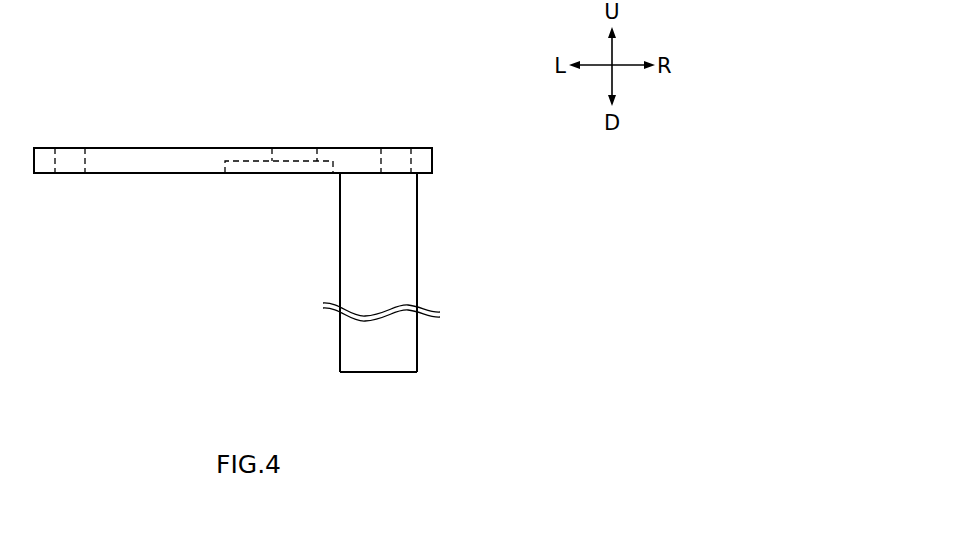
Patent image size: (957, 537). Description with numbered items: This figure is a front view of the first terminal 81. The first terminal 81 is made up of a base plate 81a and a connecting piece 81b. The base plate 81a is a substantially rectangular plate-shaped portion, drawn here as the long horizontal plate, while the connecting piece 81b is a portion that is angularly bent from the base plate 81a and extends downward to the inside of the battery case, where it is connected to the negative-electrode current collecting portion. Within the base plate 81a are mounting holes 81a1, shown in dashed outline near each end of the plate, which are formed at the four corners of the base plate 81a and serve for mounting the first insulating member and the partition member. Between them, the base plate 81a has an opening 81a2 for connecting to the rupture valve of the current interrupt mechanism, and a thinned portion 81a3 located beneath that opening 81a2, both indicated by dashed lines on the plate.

The first terminal 81 is at (276, 225).
The base plate 81a is at (157, 174).
The connecting piece 81b is at (412, 253).
The mounting holes 81a1 is at (56, 160).
The opening 81a2 is at (272, 157).
The thinned portion 81a3 is at (245, 163).